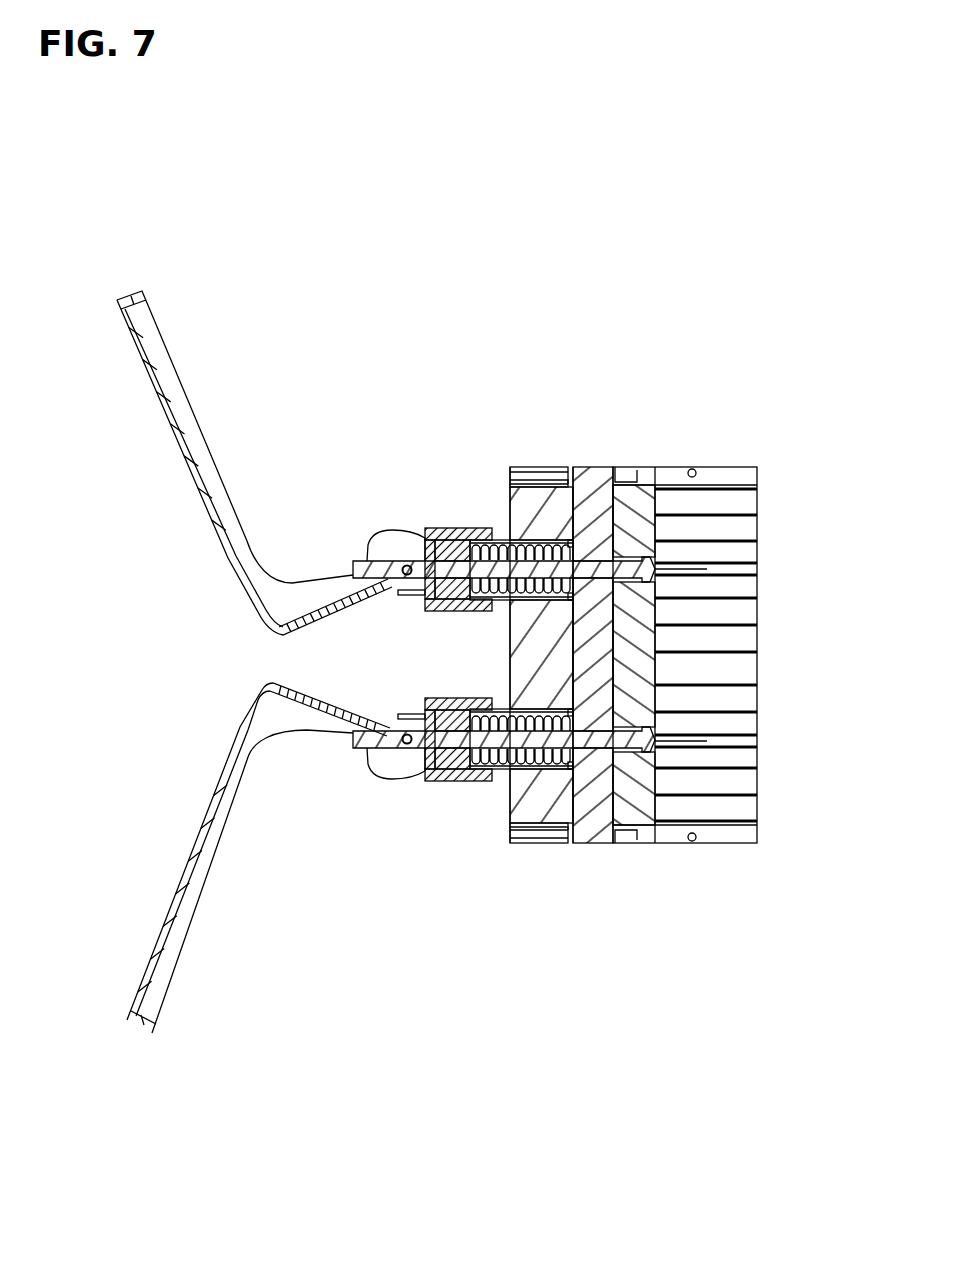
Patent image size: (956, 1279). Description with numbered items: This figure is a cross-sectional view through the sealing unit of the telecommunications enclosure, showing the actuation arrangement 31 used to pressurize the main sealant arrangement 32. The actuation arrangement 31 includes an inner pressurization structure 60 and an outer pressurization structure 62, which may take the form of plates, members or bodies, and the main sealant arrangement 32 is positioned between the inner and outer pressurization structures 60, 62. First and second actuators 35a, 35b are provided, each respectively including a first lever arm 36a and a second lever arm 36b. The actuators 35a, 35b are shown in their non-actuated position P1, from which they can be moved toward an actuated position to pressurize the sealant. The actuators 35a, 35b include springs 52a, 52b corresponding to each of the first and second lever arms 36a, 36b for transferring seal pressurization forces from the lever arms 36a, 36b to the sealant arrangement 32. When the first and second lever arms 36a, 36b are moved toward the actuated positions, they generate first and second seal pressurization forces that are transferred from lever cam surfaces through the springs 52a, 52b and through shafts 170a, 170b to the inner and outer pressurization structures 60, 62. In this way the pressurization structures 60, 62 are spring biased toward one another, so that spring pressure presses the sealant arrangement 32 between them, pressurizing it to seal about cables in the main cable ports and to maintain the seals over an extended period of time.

The actuation arrangement 31 is at (358, 662).
The main sealant arrangement 32 is at (587, 845).
The first actuator 35a is at (504, 512).
The second actuator 35b is at (504, 782).
The first lever arm 36a is at (228, 500).
The second lever arm 36b is at (225, 830).
The spring 52a is at (543, 547).
The spring 52b is at (515, 767).
The inner pressurization structure 60 is at (633, 845).
The outer pressurization structure 62 is at (532, 468).
The shaft 170a is at (490, 566).
The shaft 170b is at (463, 737).
The non-actuated position P1 is at (158, 1068).